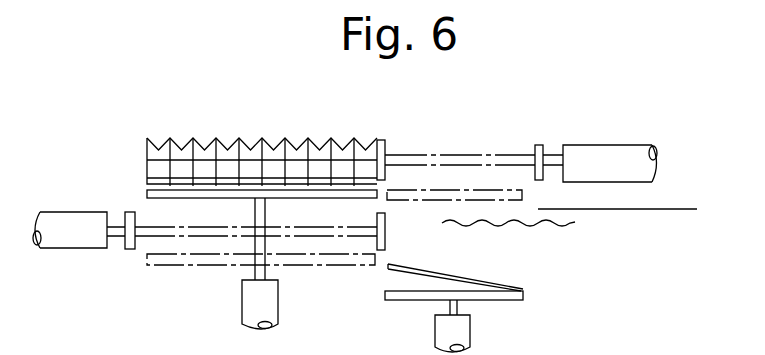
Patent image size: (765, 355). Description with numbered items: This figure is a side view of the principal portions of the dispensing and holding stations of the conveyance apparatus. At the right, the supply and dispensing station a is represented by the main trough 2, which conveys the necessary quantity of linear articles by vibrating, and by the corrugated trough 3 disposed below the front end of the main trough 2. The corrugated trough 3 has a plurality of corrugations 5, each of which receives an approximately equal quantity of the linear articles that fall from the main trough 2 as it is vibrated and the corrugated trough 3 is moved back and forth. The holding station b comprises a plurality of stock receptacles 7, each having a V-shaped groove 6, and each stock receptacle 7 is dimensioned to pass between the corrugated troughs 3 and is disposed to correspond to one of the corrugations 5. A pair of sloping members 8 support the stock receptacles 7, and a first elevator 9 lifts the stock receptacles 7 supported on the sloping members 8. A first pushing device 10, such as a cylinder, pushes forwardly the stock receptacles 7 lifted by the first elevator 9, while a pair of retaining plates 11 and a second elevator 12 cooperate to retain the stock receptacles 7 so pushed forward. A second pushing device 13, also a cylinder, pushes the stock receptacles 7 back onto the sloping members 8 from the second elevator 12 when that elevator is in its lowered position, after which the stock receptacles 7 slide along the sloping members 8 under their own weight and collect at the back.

The main trough 2 is at (628, 211).
The corrugated trough 3 is at (537, 226).
The corrugation 5 is at (478, 226).
The V-shaped groove 6 is at (298, 132).
The stock receptacle 7 is at (173, 150).
The sloping member 8 is at (497, 285).
The first elevator 9 is at (503, 301).
The first pushing device 10 is at (600, 150).
The retaining plate 11 is at (147, 168).
The second elevator 12 is at (207, 193).
The second pushing device 13 is at (63, 238).
The supply and dispensing station a is at (572, 236).
The holding station b is at (232, 126).